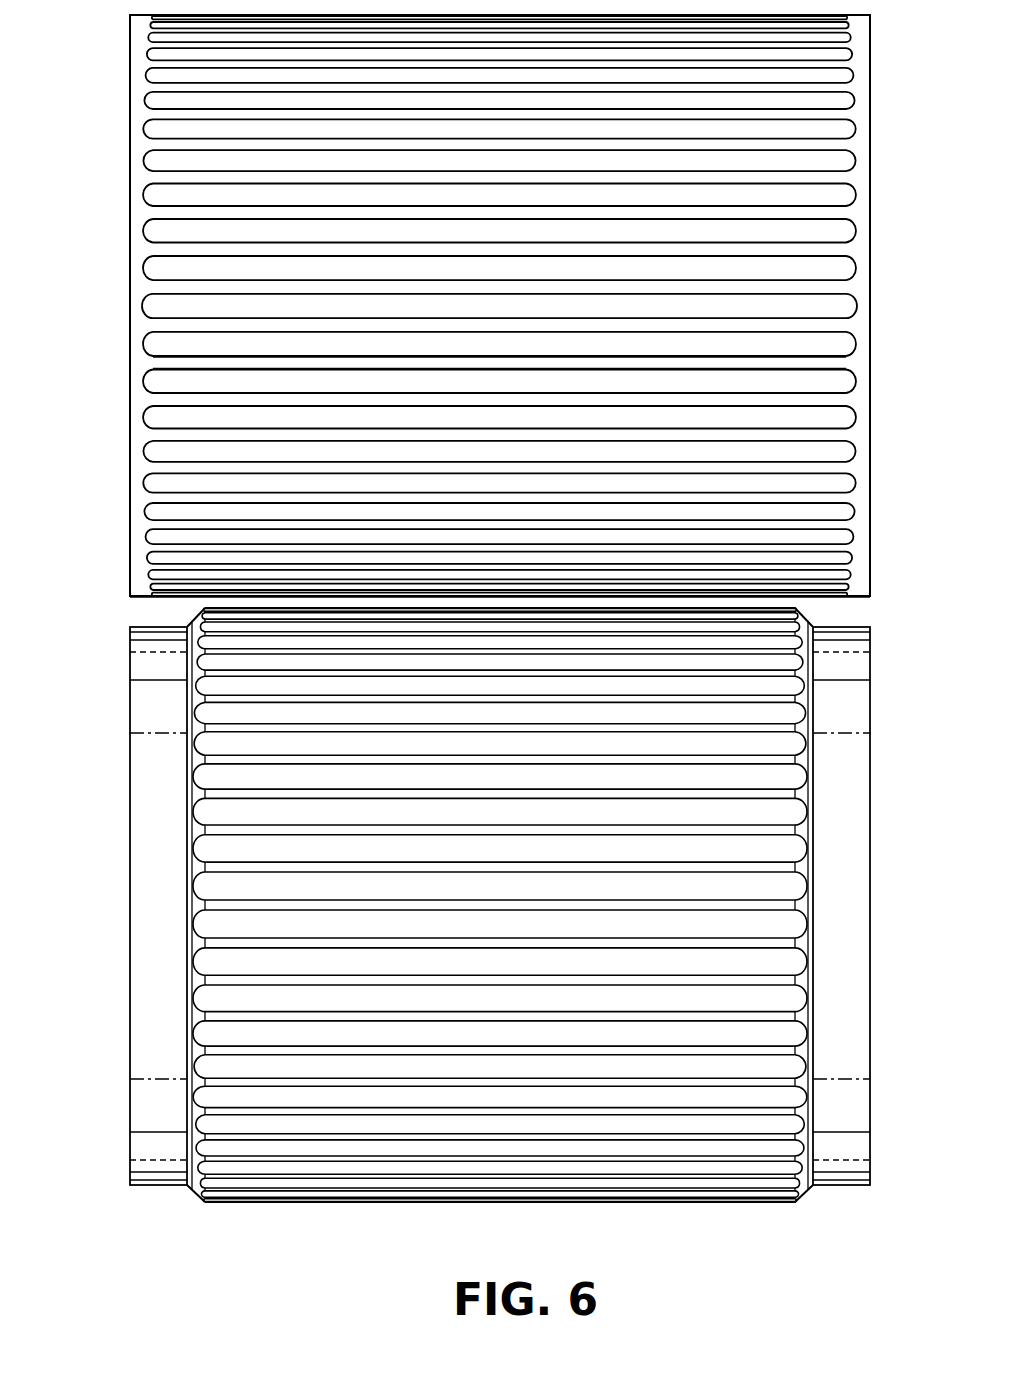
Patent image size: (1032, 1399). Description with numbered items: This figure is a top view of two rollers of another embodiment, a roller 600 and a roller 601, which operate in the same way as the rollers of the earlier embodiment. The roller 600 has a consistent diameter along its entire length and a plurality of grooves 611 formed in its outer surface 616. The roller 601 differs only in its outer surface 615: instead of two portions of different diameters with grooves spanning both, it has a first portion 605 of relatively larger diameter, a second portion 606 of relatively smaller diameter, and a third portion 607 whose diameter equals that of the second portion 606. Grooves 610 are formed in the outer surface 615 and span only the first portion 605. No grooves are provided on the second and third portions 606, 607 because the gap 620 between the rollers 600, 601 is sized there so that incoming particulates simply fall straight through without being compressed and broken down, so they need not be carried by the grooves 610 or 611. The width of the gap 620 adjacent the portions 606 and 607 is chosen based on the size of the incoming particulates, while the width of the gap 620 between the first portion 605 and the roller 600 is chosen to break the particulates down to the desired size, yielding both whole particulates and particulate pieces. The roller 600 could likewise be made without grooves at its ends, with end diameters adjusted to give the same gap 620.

The roller 600 is at (501, 305).
The roller 601 is at (532, 935).
The first portion 605 is at (563, 935).
The second portion 606 is at (187, 1210).
The third portion 607 is at (870, 1210).
The grooves 610 is at (572, 946).
The grooves 611 is at (155, 268).
The outer surface 615 is at (787, 908).
The outer surface 616 is at (155, 363).
The gap 620 is at (125, 603).